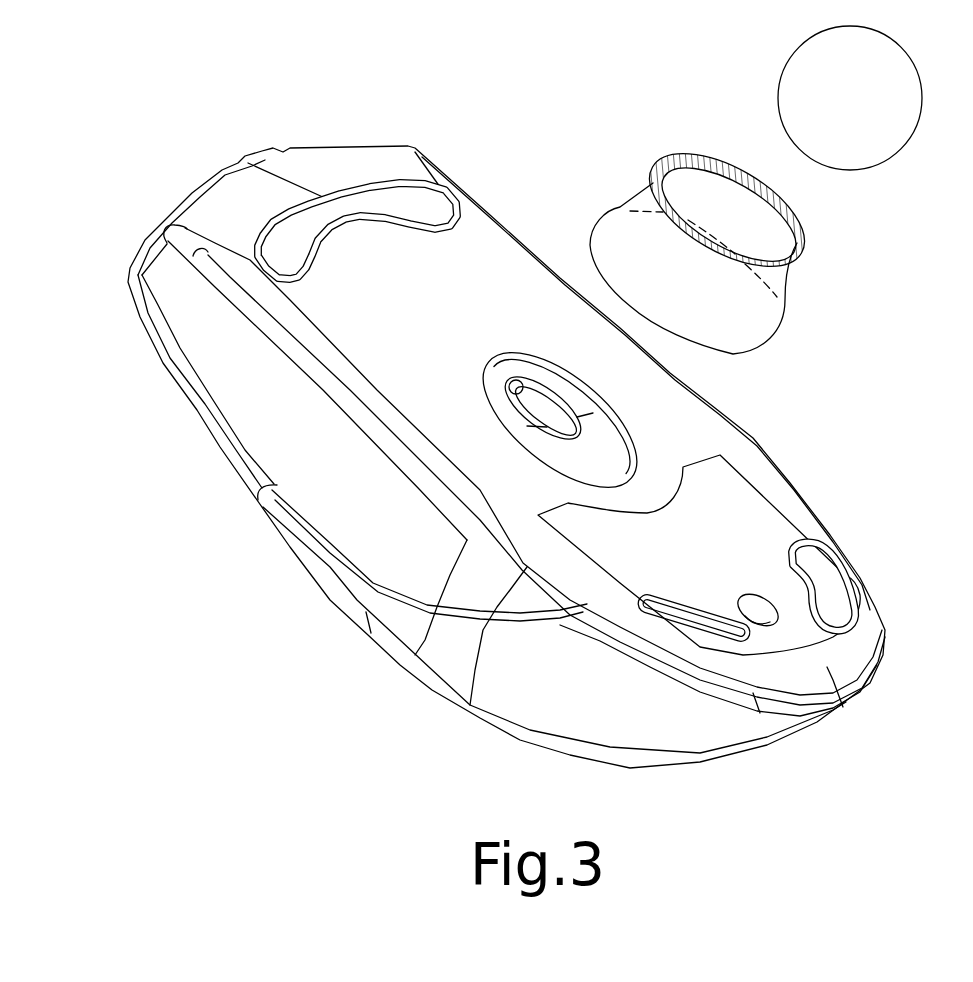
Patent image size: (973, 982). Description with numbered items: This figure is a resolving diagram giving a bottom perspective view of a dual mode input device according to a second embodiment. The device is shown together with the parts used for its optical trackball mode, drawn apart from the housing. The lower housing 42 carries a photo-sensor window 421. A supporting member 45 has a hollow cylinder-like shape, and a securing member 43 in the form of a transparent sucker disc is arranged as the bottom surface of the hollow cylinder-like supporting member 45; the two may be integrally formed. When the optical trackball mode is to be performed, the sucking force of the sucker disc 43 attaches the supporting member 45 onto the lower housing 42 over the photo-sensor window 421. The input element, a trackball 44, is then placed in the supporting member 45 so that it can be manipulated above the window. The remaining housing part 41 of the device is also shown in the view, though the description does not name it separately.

The lower housing 41 is at (563, 712).
The lower housing 42 is at (327, 305).
The photo-sensor window 421 is at (600, 457).
The securing member 43 is at (743, 317).
The trackball 44 is at (890, 120).
The supporting member 45 is at (807, 243).